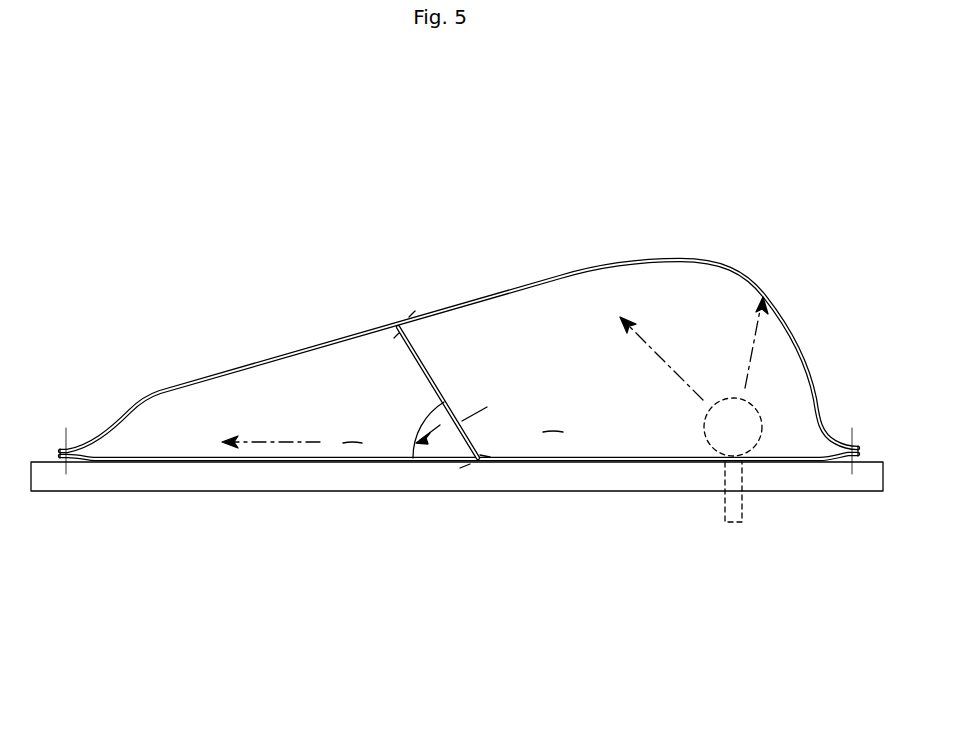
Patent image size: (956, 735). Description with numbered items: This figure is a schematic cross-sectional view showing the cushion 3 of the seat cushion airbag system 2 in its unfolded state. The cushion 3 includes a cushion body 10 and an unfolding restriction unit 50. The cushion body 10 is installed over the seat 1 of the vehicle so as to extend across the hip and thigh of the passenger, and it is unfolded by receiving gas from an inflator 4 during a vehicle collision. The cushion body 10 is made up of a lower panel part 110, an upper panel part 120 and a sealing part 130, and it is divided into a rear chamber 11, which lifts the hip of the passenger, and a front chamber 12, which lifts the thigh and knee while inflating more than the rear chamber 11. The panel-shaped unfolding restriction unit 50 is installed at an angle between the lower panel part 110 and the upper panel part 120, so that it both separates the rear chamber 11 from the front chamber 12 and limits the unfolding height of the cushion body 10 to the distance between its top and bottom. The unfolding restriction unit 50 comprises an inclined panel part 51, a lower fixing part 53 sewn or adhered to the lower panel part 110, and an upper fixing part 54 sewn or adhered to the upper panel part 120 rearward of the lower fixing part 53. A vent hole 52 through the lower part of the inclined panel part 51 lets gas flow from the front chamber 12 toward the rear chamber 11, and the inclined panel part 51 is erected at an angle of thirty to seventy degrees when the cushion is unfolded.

The seat 1 is at (513, 472).
The seat cushion airbag system 2 is at (87, 145).
The cushion 3 is at (438, 302).
The inflator 4 is at (750, 420).
The cushion body 10 is at (460, 532).
The rear chamber 11 is at (352, 445).
The front chamber 12 is at (554, 514).
The unfolding restriction unit 50 is at (461, 397).
The inclined panel part 51 is at (412, 347).
The vent hole 52 is at (458, 436).
The lower fixing part 53 is at (482, 460).
The upper fixing part 54 is at (398, 327).
The lower panel part 110 is at (262, 460).
The upper panel part 120 is at (165, 393).
The sealing part 130 is at (67, 451).